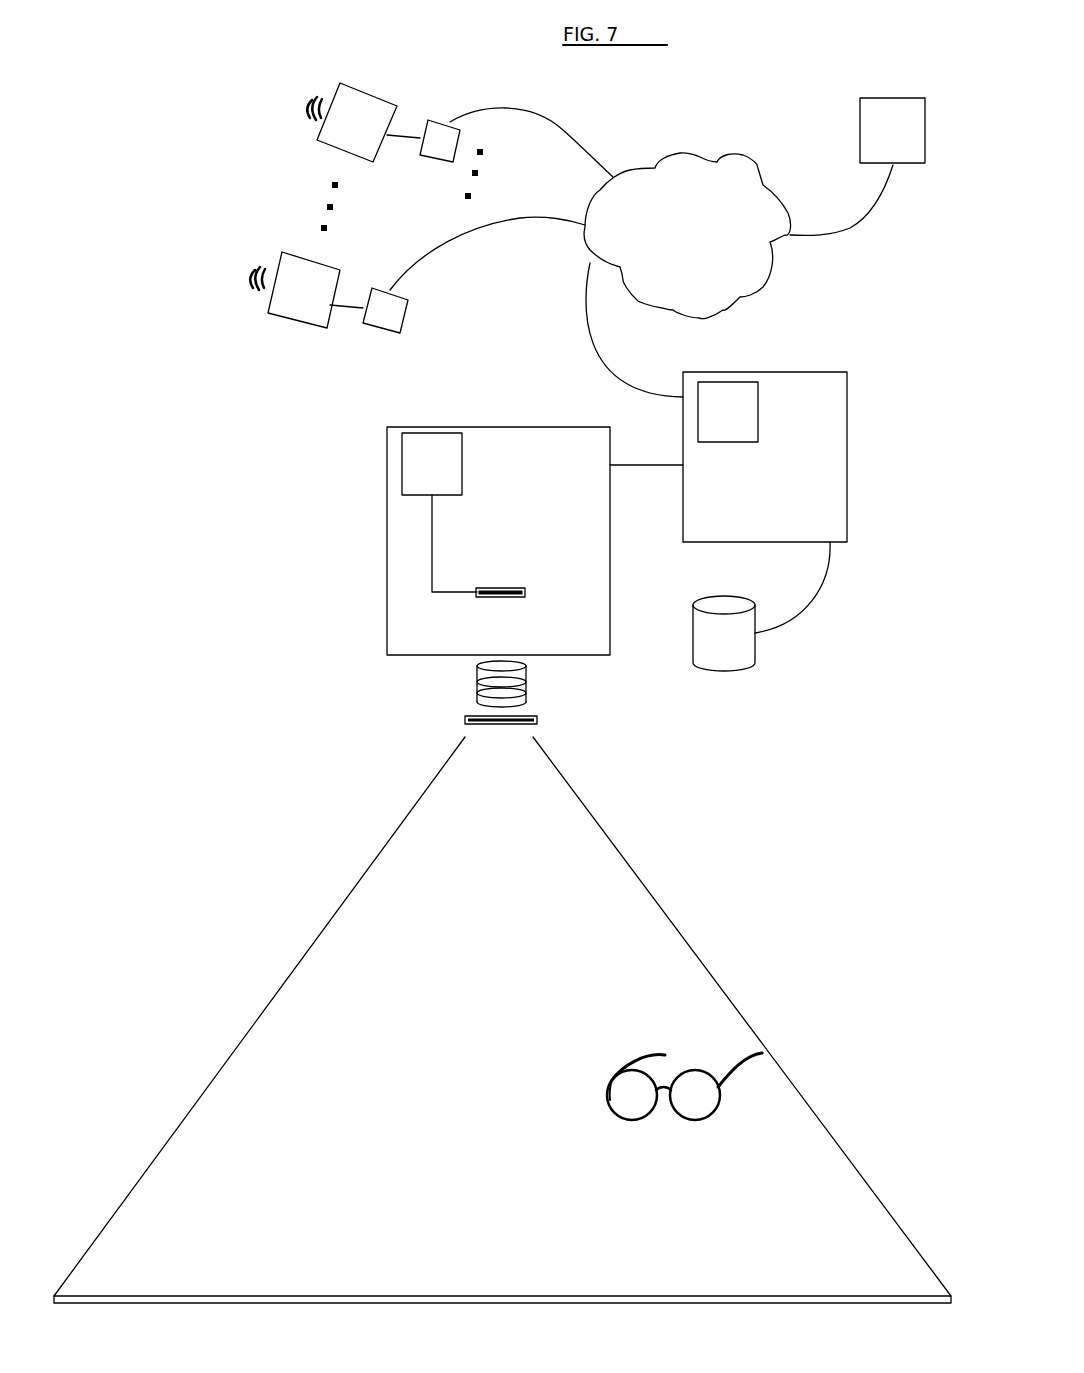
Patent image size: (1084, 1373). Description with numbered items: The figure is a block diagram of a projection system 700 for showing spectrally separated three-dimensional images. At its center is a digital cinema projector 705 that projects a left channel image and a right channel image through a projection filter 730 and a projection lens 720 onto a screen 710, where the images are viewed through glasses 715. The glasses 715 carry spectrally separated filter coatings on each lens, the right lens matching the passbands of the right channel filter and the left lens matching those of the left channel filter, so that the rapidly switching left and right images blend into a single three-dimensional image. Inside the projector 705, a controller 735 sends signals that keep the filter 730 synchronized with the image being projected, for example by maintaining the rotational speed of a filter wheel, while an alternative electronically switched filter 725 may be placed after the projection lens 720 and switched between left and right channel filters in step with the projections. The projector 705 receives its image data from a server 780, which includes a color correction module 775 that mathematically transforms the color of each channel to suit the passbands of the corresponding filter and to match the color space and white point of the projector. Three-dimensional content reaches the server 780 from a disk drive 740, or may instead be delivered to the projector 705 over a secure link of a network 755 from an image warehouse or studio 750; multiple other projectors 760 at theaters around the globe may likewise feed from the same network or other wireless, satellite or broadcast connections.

The projection system 700 is at (120, 578).
The digital cinema projector 705 is at (583, 634).
The screen 710 is at (287, 1293).
The glasses 715 is at (722, 1102).
The projection lens 720 is at (455, 680).
The electronically switched filter 725 is at (550, 718).
The projection filter 730 is at (539, 592).
The controller 735 is at (449, 474).
The disk drive 740 is at (742, 654).
The image warehouse or studio 750 is at (910, 141).
The network 755 is at (715, 247).
The other projectors 760 is at (318, 126).
The color correction module 775 is at (745, 420).
The server 780 is at (827, 516).